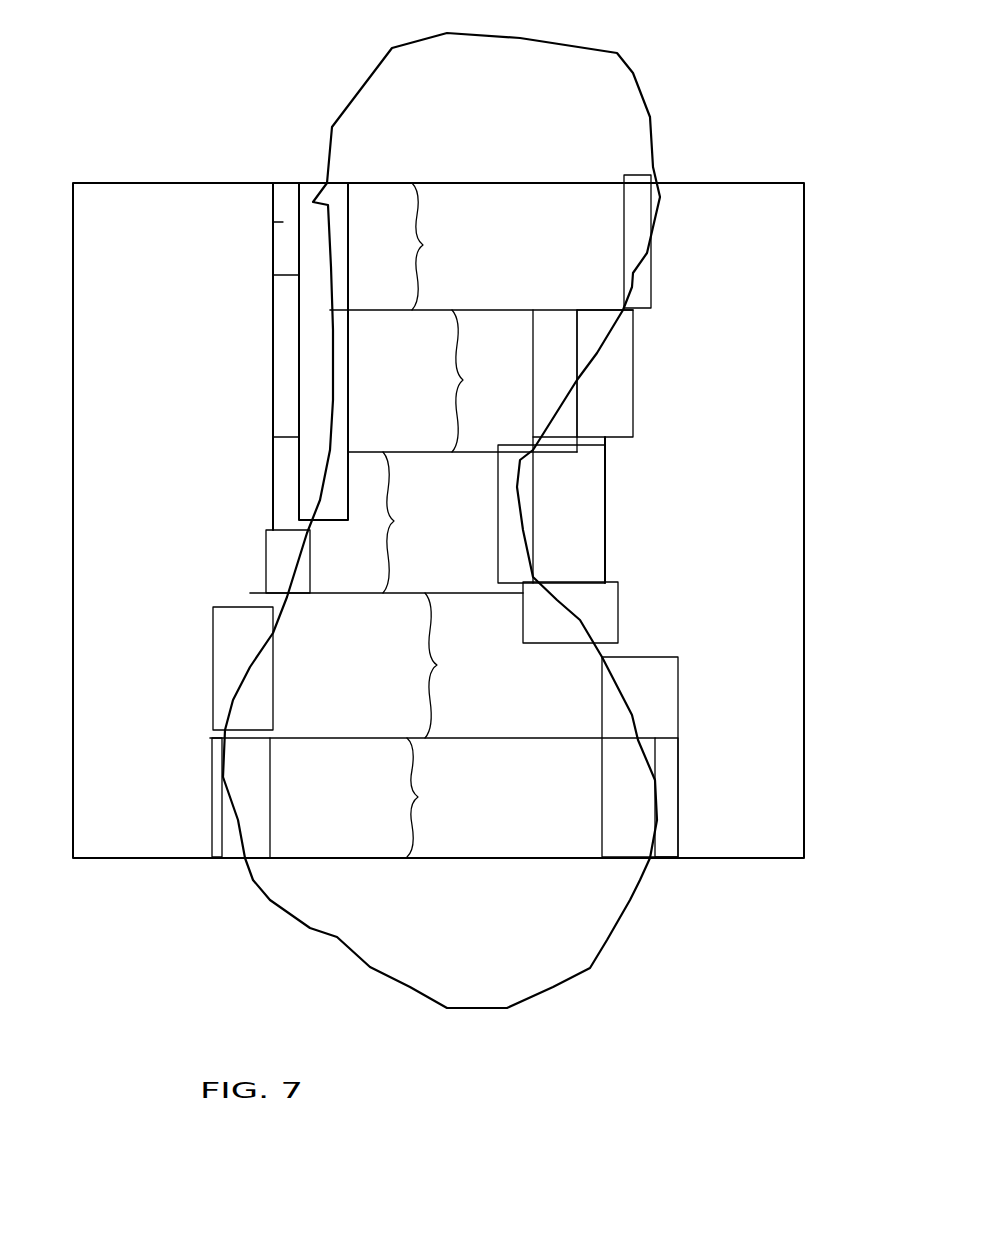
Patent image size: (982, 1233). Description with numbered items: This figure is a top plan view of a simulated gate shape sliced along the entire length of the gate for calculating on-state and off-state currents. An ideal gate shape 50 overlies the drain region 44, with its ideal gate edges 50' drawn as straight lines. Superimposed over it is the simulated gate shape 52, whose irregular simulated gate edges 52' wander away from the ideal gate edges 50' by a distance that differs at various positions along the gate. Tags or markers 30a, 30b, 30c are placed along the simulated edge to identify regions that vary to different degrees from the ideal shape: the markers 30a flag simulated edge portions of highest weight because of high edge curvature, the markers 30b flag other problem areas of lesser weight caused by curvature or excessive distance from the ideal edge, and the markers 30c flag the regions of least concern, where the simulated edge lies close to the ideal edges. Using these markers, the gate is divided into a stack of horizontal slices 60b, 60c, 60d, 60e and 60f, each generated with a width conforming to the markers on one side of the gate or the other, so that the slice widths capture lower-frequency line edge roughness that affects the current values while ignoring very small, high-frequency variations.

The drain region 44 is at (146, 466).
The simulated gate shape 52 is at (441, 508).
The simulated gate edges 52' is at (448, 583).
The ideal gate shape 50 is at (242, 356).
The ideal gate edges 50' is at (435, 383).
The markers 30a is at (633, 390).
The markers 30b is at (210, 720).
The markers 30c is at (299, 275).
The slice 60b is at (481, 246).
The slice 60c is at (462, 381).
The slice 60d is at (386, 522).
The slice 60e is at (432, 665).
The slice 60f is at (370, 797).